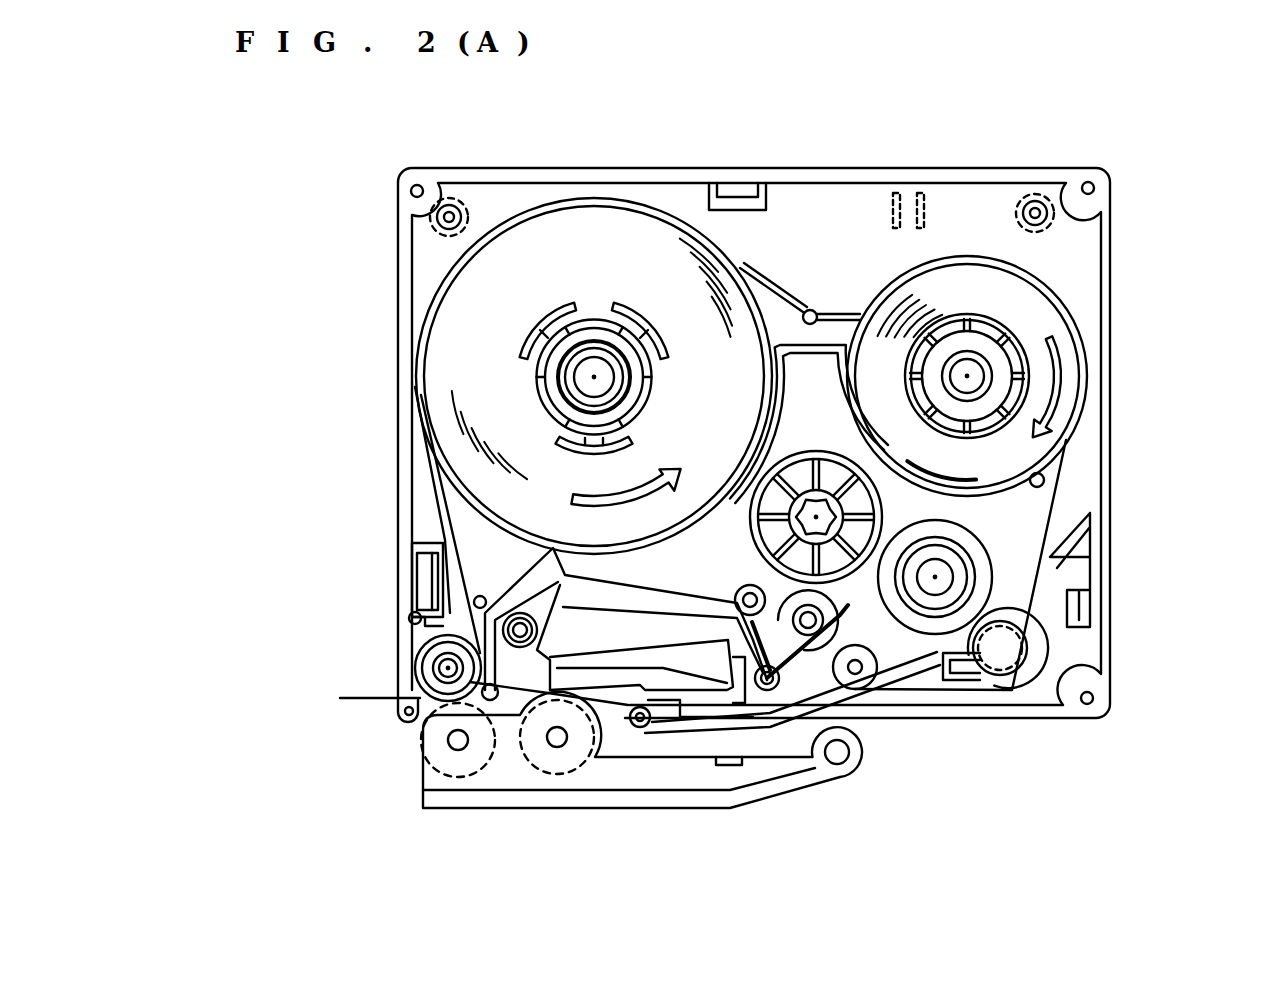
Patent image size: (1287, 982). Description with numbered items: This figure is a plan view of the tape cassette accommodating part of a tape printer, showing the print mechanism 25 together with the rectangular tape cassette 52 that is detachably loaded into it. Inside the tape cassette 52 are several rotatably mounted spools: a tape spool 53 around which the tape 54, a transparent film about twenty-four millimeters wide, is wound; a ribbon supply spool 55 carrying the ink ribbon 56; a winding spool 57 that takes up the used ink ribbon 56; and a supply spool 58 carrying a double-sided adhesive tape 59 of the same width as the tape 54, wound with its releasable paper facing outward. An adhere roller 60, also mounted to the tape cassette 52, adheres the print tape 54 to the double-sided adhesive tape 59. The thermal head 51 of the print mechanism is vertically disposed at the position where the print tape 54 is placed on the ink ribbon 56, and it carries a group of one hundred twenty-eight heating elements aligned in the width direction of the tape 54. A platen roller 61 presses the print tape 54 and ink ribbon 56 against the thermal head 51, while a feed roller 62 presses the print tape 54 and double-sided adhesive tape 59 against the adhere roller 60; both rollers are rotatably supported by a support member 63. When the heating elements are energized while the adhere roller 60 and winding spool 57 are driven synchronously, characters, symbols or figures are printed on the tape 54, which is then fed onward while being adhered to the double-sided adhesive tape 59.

The print mechanism 25 is at (296, 704).
The thermal head 51 is at (575, 655).
The tape cassette 52 is at (1108, 430).
The tape spool 53 is at (1020, 347).
The tape 54 is at (1035, 302).
The ribbon supply spool 55 is at (975, 598).
The ink ribbon 56 is at (975, 547).
The winding spool 57 is at (816, 452).
The supply spool 58 is at (594, 322).
The double-sided adhesive tape 59 is at (562, 232).
The adhere roller 60 is at (420, 630).
The platen roller 61 is at (559, 773).
The feed roller 62 is at (460, 773).
The support member 63 is at (745, 797).